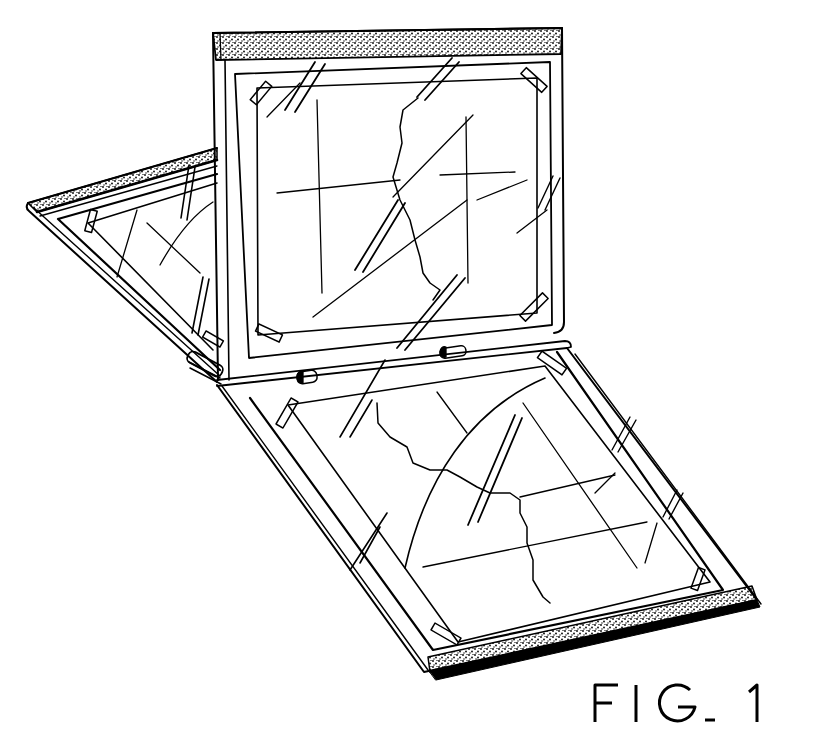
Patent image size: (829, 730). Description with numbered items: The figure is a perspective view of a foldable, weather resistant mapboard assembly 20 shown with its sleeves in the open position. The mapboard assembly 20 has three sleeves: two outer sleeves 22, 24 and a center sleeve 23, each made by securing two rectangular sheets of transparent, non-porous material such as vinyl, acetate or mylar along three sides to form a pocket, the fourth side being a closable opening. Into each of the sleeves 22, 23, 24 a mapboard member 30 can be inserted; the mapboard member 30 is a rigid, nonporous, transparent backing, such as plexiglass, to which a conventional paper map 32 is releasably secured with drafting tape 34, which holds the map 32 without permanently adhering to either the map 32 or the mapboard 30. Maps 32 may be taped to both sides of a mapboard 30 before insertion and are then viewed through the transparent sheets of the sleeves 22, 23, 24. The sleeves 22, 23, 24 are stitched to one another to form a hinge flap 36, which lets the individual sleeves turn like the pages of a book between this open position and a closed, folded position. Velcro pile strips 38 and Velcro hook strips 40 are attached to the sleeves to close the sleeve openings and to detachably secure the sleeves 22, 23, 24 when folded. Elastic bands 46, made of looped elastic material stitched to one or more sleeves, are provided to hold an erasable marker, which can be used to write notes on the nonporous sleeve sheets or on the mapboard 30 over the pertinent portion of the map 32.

The mapboard assembly 20 is at (620, 131).
The outer sleeve 22 is at (90, 257).
The center sleeve 23 is at (557, 163).
The outer sleeve 24 is at (615, 412).
The mapboard member 30 is at (553, 213).
The paper map 32 is at (540, 248).
The drafting tape 34 is at (532, 302).
The hinge flap 36 is at (187, 359).
The Velcro pile strip 38 is at (417, 47).
The Velcro hook strip 40 is at (150, 170).
The elastic band 46 is at (237, 385).